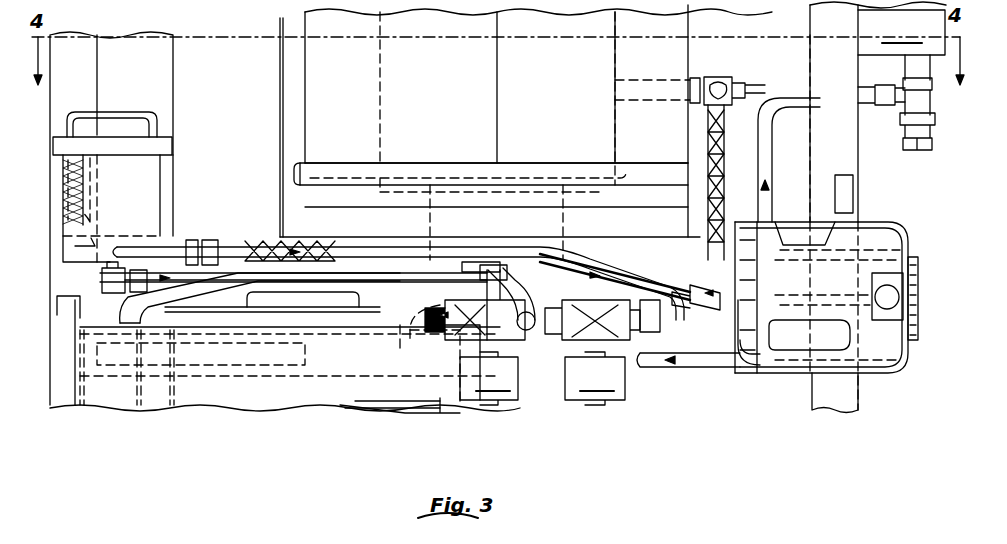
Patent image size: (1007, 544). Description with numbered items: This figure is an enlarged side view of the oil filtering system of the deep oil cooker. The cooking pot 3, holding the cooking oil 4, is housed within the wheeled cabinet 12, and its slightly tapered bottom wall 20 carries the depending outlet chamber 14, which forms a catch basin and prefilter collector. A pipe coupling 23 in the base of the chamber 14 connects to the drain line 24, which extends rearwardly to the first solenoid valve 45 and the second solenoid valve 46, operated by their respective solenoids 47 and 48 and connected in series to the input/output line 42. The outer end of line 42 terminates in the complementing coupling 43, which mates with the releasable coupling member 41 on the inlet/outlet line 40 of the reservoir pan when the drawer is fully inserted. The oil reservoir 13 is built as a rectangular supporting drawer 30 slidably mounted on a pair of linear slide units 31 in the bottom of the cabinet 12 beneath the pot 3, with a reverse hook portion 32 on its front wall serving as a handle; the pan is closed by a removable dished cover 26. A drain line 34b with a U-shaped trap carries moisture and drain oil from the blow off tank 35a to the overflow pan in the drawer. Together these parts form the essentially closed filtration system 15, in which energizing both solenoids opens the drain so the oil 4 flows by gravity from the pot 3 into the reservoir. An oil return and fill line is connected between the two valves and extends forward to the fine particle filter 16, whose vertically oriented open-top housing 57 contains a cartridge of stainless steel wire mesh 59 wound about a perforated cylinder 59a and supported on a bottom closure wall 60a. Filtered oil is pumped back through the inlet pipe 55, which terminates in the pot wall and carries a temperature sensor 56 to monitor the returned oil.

The cooking pot 3 is at (378, 72).
The cooking oil 4 is at (395, 420).
The wheeled cabinet 12 is at (58, 405).
The oil reservoir 13 is at (253, 410).
The outlet chamber 14 is at (572, 222).
The filtration system 15 is at (553, 405).
The fine particle filter 16 is at (166, 176).
The bottom wall 20 is at (411, 184).
The pipe coupling 23 is at (465, 270).
The drain line 24 is at (613, 282).
The cover 26 is at (380, 300).
The supporting drawer 30 is at (195, 395).
The linear slide units 31 is at (112, 366).
The reverse hook portion 32 is at (80, 272).
The drain line 34b is at (735, 368).
The blow off tank 35a is at (878, 112).
The inlet/outlet line 40 is at (400, 385).
The releasable coupling member 41 is at (438, 322).
The input/output line 42 is at (560, 340).
The complementing coupling 43 is at (490, 340).
The first solenoid valve 45 is at (607, 402).
The second solenoid valve 46 is at (500, 402).
The solenoid 47 is at (595, 378).
The solenoid 48 is at (489, 378).
The inlet pipe 55 is at (638, 83).
The temperature sensor 56 is at (730, 82).
The housing 57 is at (66, 216).
The wire mesh 59 is at (85, 208).
The perforated cylinder 59a is at (85, 173).
The bottom closure wall 60a is at (90, 235).